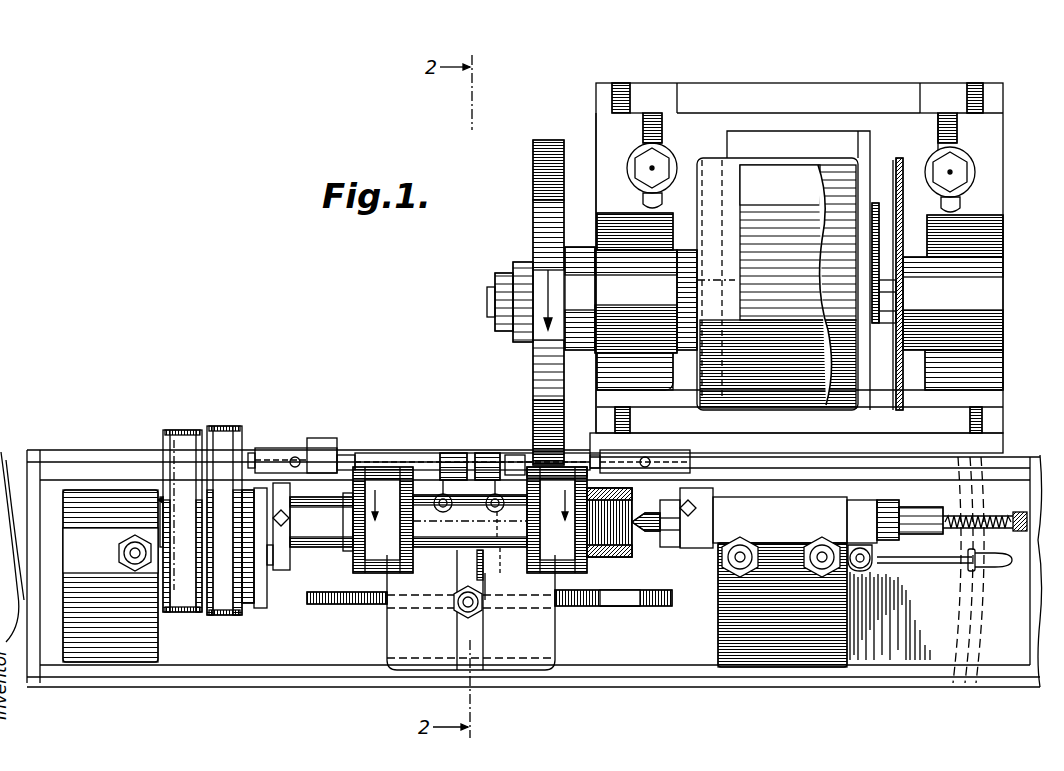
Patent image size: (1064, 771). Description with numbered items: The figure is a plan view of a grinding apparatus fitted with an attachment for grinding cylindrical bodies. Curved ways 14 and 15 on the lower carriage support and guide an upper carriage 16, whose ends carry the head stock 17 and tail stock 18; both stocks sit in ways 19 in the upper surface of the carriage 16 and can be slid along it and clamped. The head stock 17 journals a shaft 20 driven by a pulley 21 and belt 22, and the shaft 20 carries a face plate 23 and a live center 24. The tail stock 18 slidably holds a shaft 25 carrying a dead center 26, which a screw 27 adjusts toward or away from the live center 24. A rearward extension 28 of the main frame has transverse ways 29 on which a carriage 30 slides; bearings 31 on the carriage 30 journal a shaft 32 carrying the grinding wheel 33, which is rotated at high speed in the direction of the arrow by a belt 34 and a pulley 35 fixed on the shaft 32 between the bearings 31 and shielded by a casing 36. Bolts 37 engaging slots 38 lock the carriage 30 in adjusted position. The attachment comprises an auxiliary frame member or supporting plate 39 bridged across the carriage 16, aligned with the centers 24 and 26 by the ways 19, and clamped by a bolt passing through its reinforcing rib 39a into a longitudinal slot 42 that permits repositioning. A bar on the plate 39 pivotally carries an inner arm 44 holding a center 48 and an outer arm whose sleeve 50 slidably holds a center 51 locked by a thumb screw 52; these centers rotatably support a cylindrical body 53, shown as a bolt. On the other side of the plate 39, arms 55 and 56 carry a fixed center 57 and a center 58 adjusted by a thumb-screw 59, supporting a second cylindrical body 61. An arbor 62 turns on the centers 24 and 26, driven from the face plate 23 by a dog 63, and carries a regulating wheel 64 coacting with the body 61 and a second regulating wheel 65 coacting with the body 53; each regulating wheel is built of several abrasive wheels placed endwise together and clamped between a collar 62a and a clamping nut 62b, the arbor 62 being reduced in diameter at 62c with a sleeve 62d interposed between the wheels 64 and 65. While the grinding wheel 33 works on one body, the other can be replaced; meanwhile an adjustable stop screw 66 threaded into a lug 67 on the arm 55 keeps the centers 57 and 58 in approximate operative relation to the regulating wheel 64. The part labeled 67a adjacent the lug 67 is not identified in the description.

The curved way 14 is at (22, 462).
The curved way 15 is at (975, 640).
The upper carriage 16 is at (295, 650).
The head stock 17 is at (140, 645).
The tail stock 18 is at (800, 645).
The ways 19 is at (1008, 500).
The shaft 20 is at (160, 497).
The pulley 21 is at (216, 470).
The belt 22 is at (180, 432).
The face plate 23 is at (248, 490).
The live center 24 is at (281, 500).
The shaft 25 is at (672, 535).
The dead center 26 is at (650, 532).
The screw 27 is at (960, 528).
The rearward extension 28 is at (843, 98).
The ways 29 is at (622, 90).
The carriage 30 is at (612, 165).
The bearings 31 is at (784, 301).
The shaft 32 is at (885, 290).
The grinding wheel 33 is at (548, 228).
The belt 34 is at (865, 180).
The pulley 35 is at (878, 235).
The casing 36 is at (707, 175).
The clamping bolts 37 is at (650, 168).
The slots 38 is at (645, 128).
The auxiliary frame member 39 is at (545, 650).
The reinforcing rib 39a is at (455, 565).
The slot 42 is at (650, 606).
The inner arm 44 is at (487, 458).
The center 48 is at (512, 458).
The sleeve 50 is at (705, 451).
The center 51 is at (620, 430).
The thumb screw 52 is at (650, 452).
The cylindrical body 53 is at (575, 467).
The upstanding arm 55 is at (453, 452).
The upstanding arm 56 is at (320, 445).
The fixed center 57 is at (452, 455).
The center 58 is at (345, 455).
The thumb-screw 59 is at (297, 457).
The cylindrical body 61 is at (380, 470).
The arbor 62 is at (318, 530).
The collar 62a is at (347, 551).
The clamping nut 62b is at (610, 557).
The reduced diameter portion 62c is at (497, 556).
The sleeve 62d is at (487, 553).
The dog 63 is at (283, 560).
The regulating wheel 64 is at (380, 604).
The second regulating wheel 65 is at (560, 560).
The screw 66 is at (465, 573).
The lug 67 is at (440, 498).
The pin 67a is at (497, 500).